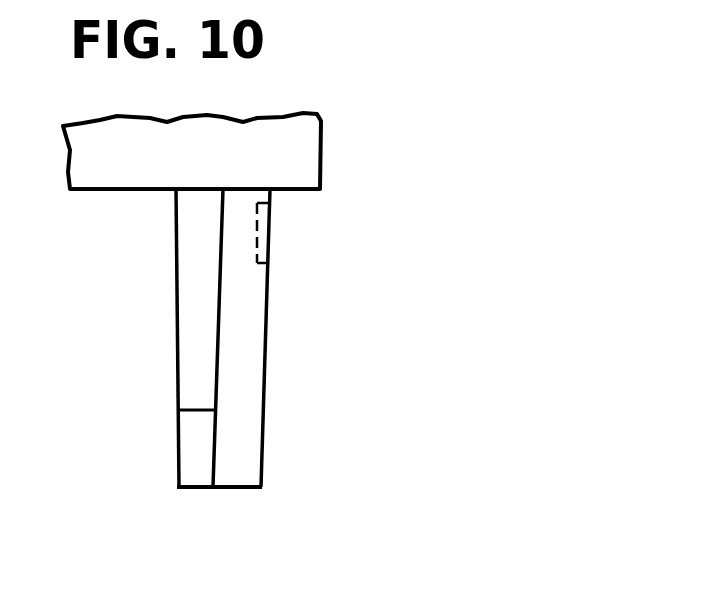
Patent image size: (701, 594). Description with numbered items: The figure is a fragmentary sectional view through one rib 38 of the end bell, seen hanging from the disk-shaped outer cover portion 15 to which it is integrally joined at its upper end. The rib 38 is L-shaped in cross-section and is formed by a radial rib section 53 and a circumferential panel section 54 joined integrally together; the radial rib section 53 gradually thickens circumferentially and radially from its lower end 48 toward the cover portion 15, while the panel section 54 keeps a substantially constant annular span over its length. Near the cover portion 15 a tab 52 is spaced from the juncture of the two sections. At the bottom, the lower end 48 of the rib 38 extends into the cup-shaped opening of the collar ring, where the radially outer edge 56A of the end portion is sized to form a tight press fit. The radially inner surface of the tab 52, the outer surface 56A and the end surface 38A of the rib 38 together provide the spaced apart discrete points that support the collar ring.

The outer cover portion 15 is at (306, 146).
The rib 38 is at (167, 327).
The end surface of the rib 38A is at (214, 493).
The lower end of the rib 48 is at (190, 466).
The tab 52 is at (258, 235).
The radial rib section 53 is at (183, 273).
The circumferential panel section 54 is at (247, 337).
The radially outer edge of the rib lower end 56A is at (197, 431).